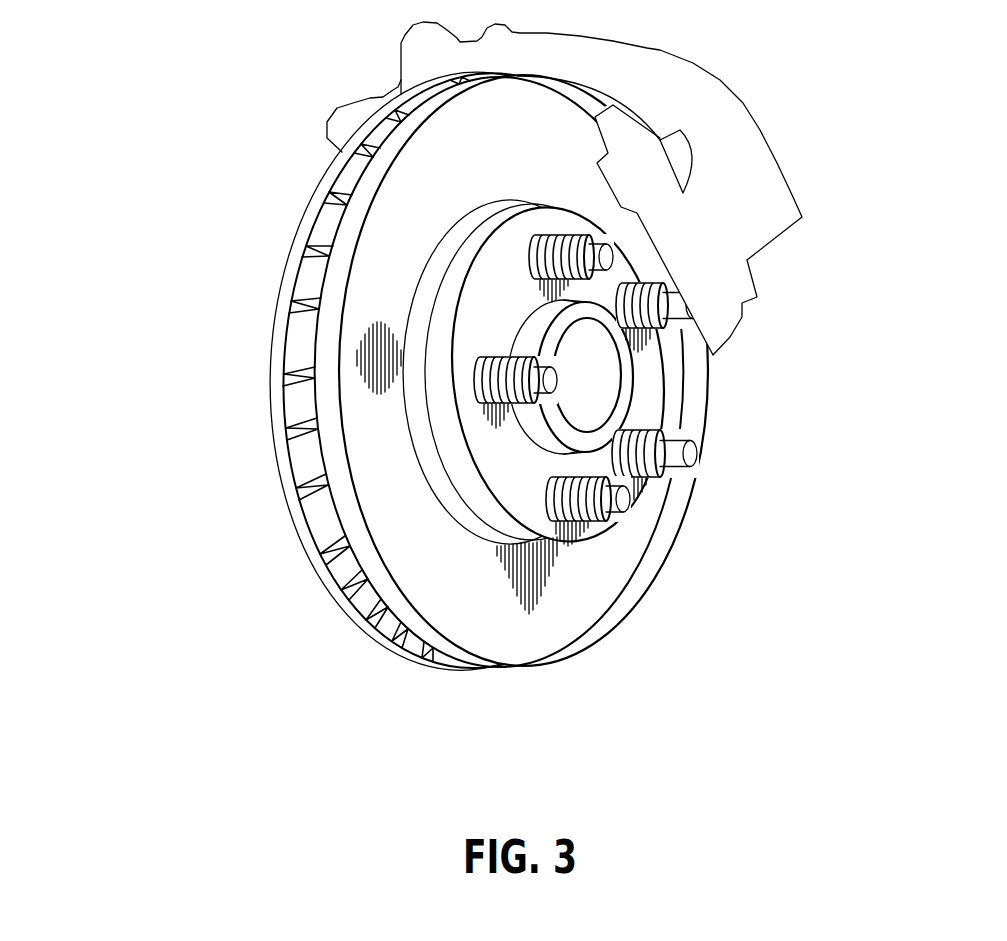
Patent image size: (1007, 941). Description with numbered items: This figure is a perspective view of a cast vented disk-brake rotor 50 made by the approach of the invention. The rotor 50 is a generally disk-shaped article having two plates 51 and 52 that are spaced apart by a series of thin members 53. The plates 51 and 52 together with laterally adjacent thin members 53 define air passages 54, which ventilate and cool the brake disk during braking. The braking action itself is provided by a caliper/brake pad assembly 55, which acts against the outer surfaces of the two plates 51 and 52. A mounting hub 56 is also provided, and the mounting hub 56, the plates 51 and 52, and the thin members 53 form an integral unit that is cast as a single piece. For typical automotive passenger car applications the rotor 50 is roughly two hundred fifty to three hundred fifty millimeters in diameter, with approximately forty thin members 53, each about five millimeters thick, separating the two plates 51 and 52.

The vented disk-brake rotor 50 is at (482, 398).
The plate 51 is at (517, 667).
The plate 52 is at (327, 567).
The thin member 53 is at (337, 188).
The air passage 54 is at (322, 230).
The caliper/brake pad assembly 55 is at (727, 209).
The mounting hub 56 is at (652, 400).